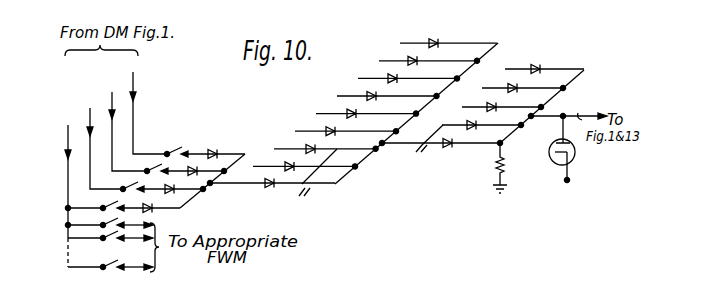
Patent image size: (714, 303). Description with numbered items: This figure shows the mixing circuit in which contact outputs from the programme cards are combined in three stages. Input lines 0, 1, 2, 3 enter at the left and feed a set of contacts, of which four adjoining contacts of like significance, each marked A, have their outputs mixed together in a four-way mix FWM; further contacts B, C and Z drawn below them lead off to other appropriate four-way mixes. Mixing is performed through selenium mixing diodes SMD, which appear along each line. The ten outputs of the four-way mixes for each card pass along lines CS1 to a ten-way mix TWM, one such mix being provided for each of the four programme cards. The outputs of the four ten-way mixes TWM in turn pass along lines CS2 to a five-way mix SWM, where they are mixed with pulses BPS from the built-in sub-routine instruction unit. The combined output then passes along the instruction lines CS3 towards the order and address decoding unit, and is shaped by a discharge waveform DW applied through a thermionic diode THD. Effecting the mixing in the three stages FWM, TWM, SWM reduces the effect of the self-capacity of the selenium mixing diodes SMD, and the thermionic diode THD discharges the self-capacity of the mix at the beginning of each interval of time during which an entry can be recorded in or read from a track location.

The input lead 0 from DM 0 is at (67, 187).
The input lead 1 from DM 1 is at (105, 140).
The input lead 2 from DM 2 is at (126, 122).
The input lead 3 from DM 3 is at (146, 104).
The adjoining contacts of like significance A is at (178, 146).
The relay contact B is at (109, 222).
The relay contact C is at (104, 241).
The relay contact Z is at (114, 263).
The selenium mixing diodes SMD is at (301, 146).
The four-way mix FWM is at (204, 197).
The lines CS1 is at (314, 181).
The ten-way mix TWM is at (366, 170).
The lines CS2 is at (426, 150).
The five-way mix SWM is at (525, 129).
The instruction lines CS3 is at (569, 108).
The pulses from the built-in sub-routine instruction unit BPS is at (526, 70).
The thermionic diode THD is at (577, 154).
The discharge waveform DW is at (565, 178).